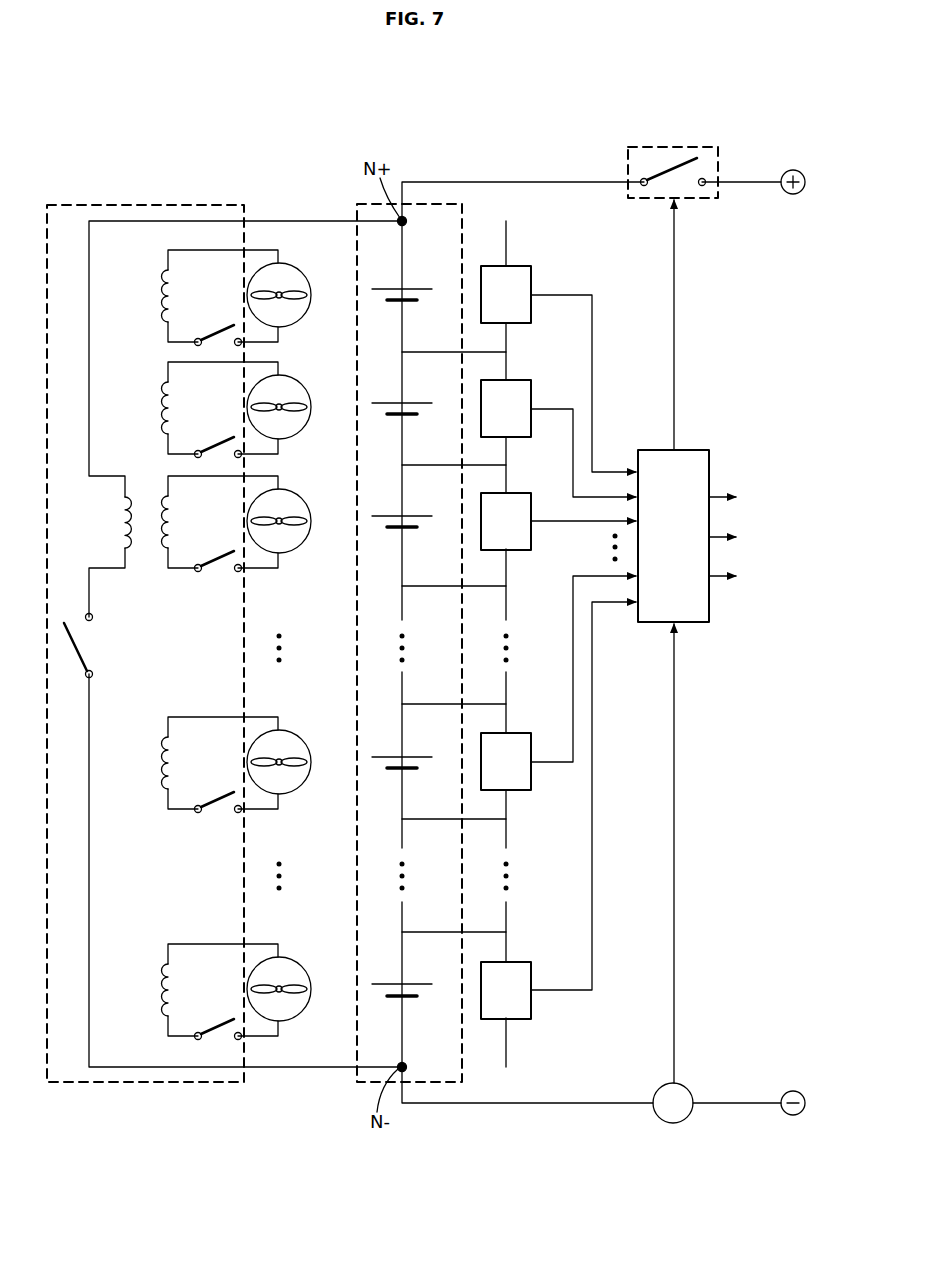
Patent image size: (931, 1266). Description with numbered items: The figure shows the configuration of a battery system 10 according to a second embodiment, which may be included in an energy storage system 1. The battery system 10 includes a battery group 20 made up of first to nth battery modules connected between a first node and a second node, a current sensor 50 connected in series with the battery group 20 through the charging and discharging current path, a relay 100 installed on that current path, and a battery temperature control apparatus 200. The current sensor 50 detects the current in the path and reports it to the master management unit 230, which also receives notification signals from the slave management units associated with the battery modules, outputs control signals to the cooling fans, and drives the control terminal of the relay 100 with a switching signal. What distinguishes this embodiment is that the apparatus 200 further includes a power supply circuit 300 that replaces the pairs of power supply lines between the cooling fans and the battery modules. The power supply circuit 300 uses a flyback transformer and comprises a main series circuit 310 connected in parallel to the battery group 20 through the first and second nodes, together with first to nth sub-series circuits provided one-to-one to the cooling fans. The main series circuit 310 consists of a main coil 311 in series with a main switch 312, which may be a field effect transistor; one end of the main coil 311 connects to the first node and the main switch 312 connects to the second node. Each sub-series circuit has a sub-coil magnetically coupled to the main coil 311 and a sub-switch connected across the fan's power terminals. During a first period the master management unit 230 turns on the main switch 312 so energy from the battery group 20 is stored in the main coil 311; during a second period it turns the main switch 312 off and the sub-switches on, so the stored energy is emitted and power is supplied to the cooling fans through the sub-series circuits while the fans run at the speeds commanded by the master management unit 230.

The energy storage system 1 is at (512, 116).
The battery system 10 is at (193, 126).
The battery group 20 is at (412, 631).
The current sensor 50 is at (685, 1087).
The relay 100 is at (675, 146).
The battery temperature control apparatus 200 is at (652, 641).
The master management unit 230 is at (690, 450).
The power supply circuit 300 is at (105, 204).
The main series circuit 310 is at (229, 644).
The main coil 311 is at (122, 500).
The main switch 312 is at (82, 650).